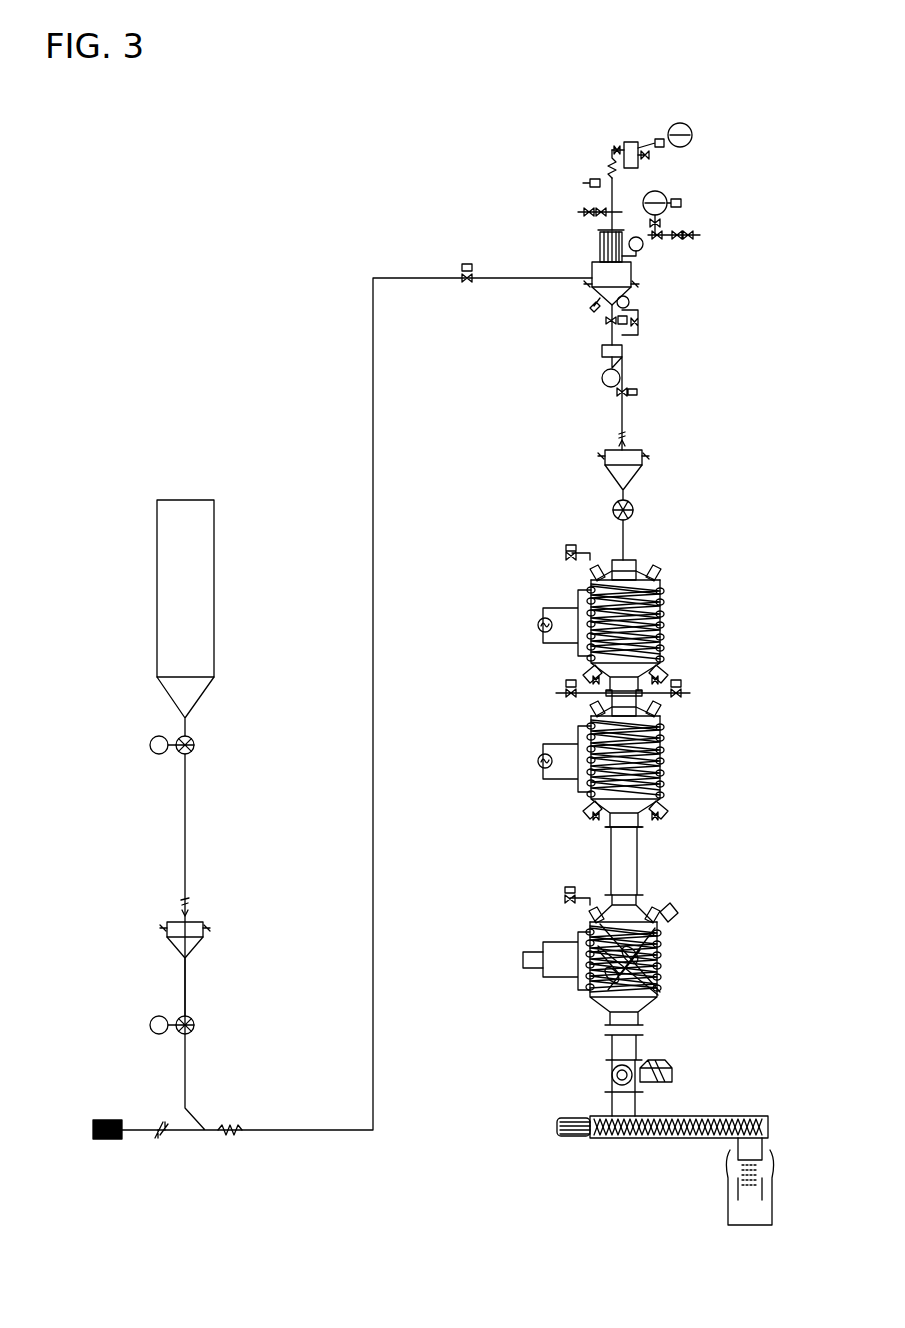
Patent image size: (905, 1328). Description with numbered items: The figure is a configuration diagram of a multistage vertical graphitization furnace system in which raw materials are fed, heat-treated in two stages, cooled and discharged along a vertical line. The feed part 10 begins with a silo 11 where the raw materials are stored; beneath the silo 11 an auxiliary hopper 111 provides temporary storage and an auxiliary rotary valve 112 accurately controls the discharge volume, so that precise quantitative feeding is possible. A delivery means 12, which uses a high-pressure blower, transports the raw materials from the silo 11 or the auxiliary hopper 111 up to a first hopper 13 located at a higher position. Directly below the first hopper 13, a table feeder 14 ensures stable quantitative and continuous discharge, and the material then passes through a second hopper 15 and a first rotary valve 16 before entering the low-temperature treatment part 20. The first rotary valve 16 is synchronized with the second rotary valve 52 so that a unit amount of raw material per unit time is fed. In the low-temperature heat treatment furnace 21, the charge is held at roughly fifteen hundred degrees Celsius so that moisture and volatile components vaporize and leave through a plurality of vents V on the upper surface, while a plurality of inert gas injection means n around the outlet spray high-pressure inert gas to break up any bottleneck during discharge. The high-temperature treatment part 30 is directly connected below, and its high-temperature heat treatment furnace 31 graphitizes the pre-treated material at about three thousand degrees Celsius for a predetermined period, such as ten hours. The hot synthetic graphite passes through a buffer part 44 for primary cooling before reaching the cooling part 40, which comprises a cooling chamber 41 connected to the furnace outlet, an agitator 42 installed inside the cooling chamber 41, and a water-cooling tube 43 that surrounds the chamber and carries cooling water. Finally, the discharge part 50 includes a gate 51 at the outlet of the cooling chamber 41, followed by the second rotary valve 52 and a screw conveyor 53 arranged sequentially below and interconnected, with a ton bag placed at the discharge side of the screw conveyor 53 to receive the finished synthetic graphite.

The feed part 10 is at (252, 627).
The silo 11 is at (222, 597).
The auxiliary hopper 111 is at (205, 925).
The auxiliary rotary valve 112 is at (197, 1025).
The delivery means 12 is at (113, 1140).
The first hopper 13 is at (633, 272).
The table feeder 14 is at (600, 349).
The second hopper 15 is at (603, 462).
The first rotary valve 16 is at (633, 510).
The low-temperature treatment part 20 is at (669, 620).
The low-temperature heat treatment furnace 21 is at (668, 618).
The high-temperature treatment part 30 is at (669, 772).
The high-temperature heat treatment furnace 31 is at (670, 765).
The cooling part 40 is at (697, 960).
The cooling chamber 41 is at (672, 954).
The agitator 42 is at (575, 948).
The water-cooling tube 43 is at (655, 985).
The buffer part 44 is at (640, 858).
The discharge part 50 is at (527, 1033).
The gate 51 is at (592, 1030).
The second rotary valve 52 is at (608, 1073).
The screw conveyor 53 is at (610, 1140).
The inert gas injection means n is at (572, 550).
The vent V is at (598, 574).